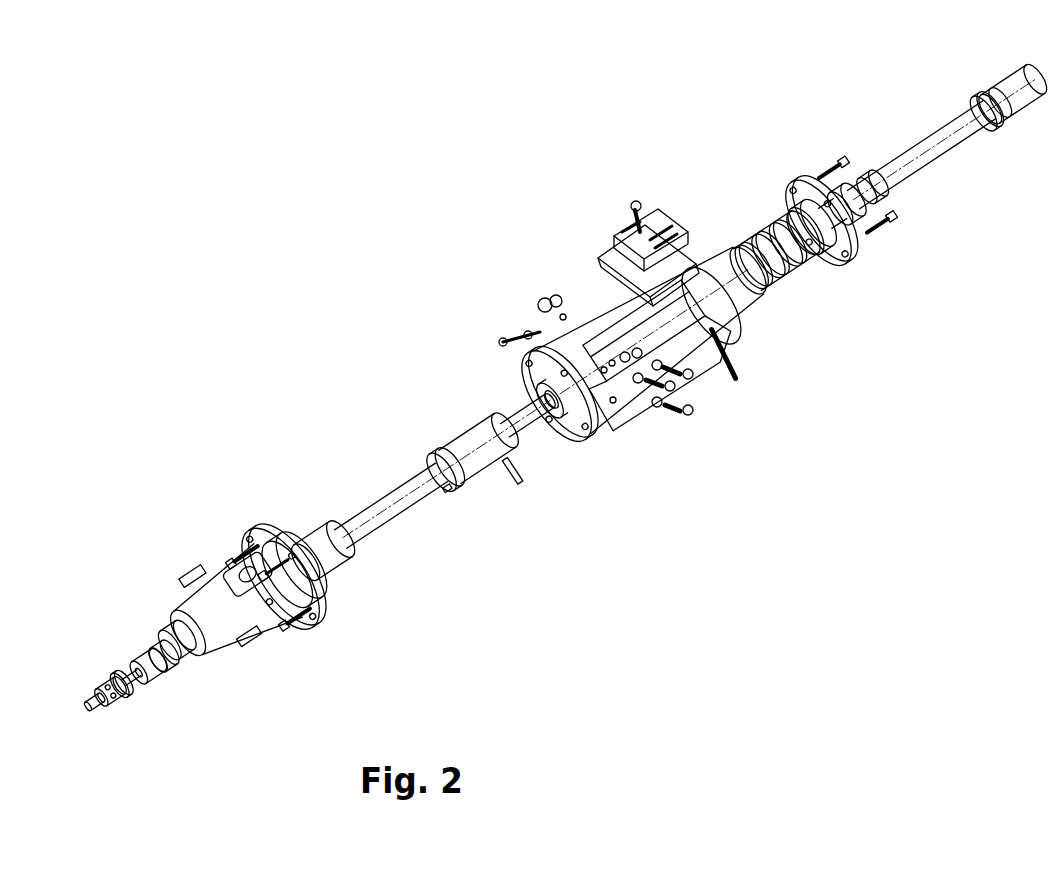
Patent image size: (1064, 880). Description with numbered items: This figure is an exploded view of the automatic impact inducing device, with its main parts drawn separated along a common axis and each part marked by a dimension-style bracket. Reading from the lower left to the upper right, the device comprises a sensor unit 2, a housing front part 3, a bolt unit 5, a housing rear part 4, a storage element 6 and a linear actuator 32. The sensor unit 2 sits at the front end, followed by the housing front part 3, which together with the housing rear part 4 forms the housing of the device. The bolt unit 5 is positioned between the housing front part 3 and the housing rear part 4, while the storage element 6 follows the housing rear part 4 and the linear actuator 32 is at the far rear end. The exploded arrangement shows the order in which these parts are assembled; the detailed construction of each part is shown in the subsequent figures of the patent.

The sensor unit 2 is at (205, 675).
The housing front part 3 is at (358, 602).
The housing rear part 4 is at (752, 367).
The bolt unit 5 is at (559, 465).
The storage element 6 is at (873, 278).
The linear actuator 32 is at (1051, 158).